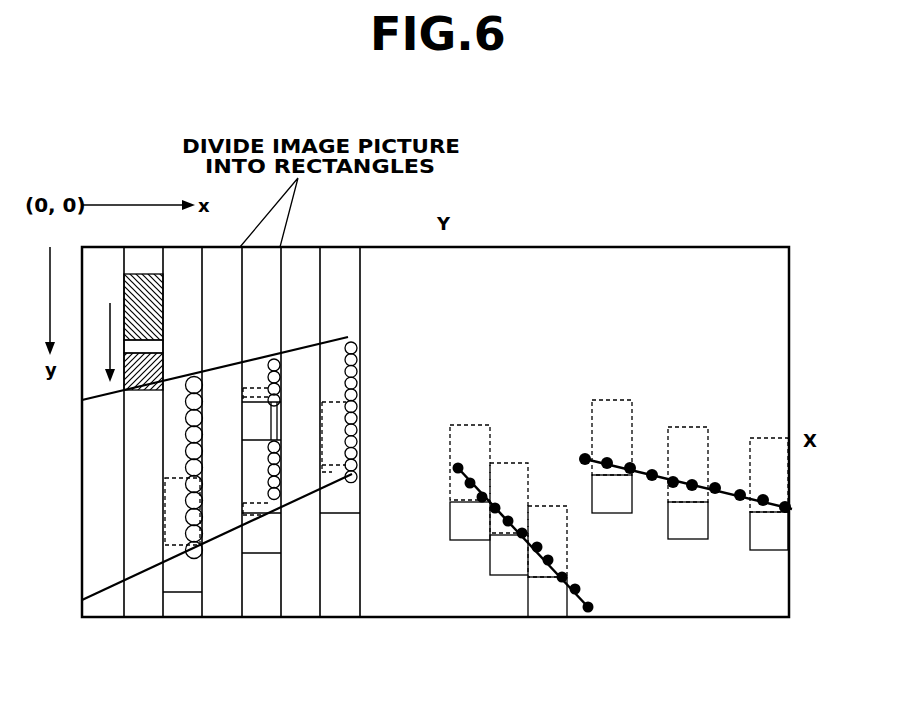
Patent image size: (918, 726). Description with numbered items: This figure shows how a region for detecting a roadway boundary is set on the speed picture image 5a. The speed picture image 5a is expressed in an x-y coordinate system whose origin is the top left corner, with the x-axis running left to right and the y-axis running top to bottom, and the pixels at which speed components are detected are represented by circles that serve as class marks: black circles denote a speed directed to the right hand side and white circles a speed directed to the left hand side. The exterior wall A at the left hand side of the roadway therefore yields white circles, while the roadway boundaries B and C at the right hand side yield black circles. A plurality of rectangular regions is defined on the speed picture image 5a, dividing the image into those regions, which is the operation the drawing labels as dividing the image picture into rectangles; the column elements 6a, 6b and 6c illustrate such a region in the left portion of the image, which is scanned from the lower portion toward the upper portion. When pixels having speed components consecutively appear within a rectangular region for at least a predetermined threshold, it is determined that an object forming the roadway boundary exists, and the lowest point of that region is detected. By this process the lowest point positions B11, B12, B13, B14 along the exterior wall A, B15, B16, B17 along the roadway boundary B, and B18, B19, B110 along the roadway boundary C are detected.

The speed picture image 5a is at (750, 295).
The gap region between hatched blocks 6a is at (155, 346).
The upper hatched block 6b is at (155, 298).
The lower hatched block 6c is at (146, 382).
The exterior wall A is at (112, 585).
The roadway boundary B is at (583, 598).
The roadway boundary C is at (588, 458).
The lowest point position B11 is at (165, 550).
The lowest point position B12 is at (243, 397).
The lowest point position B13 is at (268, 510).
The lowest point position B14 is at (335, 470).
The lowest point position B15 is at (462, 498).
The lowest point position B16 is at (490, 538).
The lowest point position B17 is at (528, 580).
The lowest point position B18 is at (598, 470).
The lowest point position B19 is at (668, 500).
The lowest point position B110 is at (750, 512).